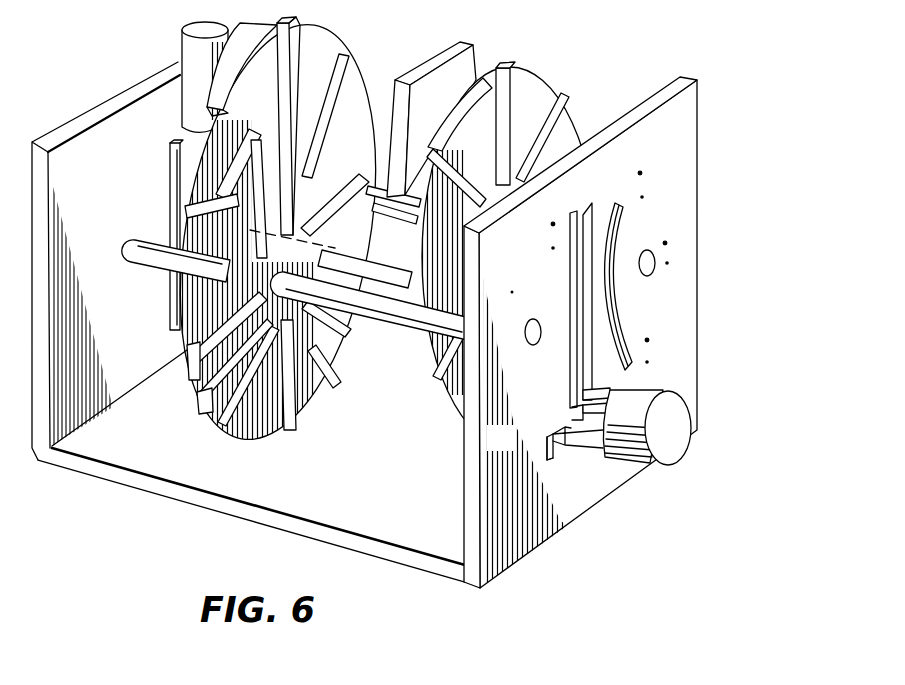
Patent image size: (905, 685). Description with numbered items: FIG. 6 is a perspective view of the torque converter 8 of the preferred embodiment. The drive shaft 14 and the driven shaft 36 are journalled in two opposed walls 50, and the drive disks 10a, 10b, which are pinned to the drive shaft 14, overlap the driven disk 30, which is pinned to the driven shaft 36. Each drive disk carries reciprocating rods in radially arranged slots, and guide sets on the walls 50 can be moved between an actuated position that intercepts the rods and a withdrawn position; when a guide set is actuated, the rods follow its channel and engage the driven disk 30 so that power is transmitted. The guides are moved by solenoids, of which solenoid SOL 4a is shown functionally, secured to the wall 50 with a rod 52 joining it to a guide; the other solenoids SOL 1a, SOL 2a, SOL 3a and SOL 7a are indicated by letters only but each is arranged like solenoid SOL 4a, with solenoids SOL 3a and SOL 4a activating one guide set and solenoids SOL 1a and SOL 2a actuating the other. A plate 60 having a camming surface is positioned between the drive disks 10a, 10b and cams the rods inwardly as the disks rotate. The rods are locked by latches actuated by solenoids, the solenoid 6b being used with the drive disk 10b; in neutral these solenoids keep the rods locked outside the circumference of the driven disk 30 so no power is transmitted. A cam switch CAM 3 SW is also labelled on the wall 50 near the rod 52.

The torque converter 8 is at (582, 66).
The solenoid 6b is at (193, 25).
The drive disk 10a is at (490, 152).
The drive disk 10b is at (268, 108).
The drive shaft 14 is at (648, 277).
The driven disk 30 is at (212, 416).
The driven shaft 36 is at (381, 317).
The walls 50 is at (110, 188).
The rod 52 is at (598, 413).
The plate 60 is at (460, 40).
The solenoid 1a SOL 1a is at (643, 186).
The solenoid 2a SOL 2a is at (650, 353).
The solenoid 3a SOL 3a is at (552, 231).
The solenoid 4a SOL 4a is at (675, 448).
The solenoid 7a SOL 7a is at (670, 253).
The cam 3 switch CAM 3 SW is at (558, 447).